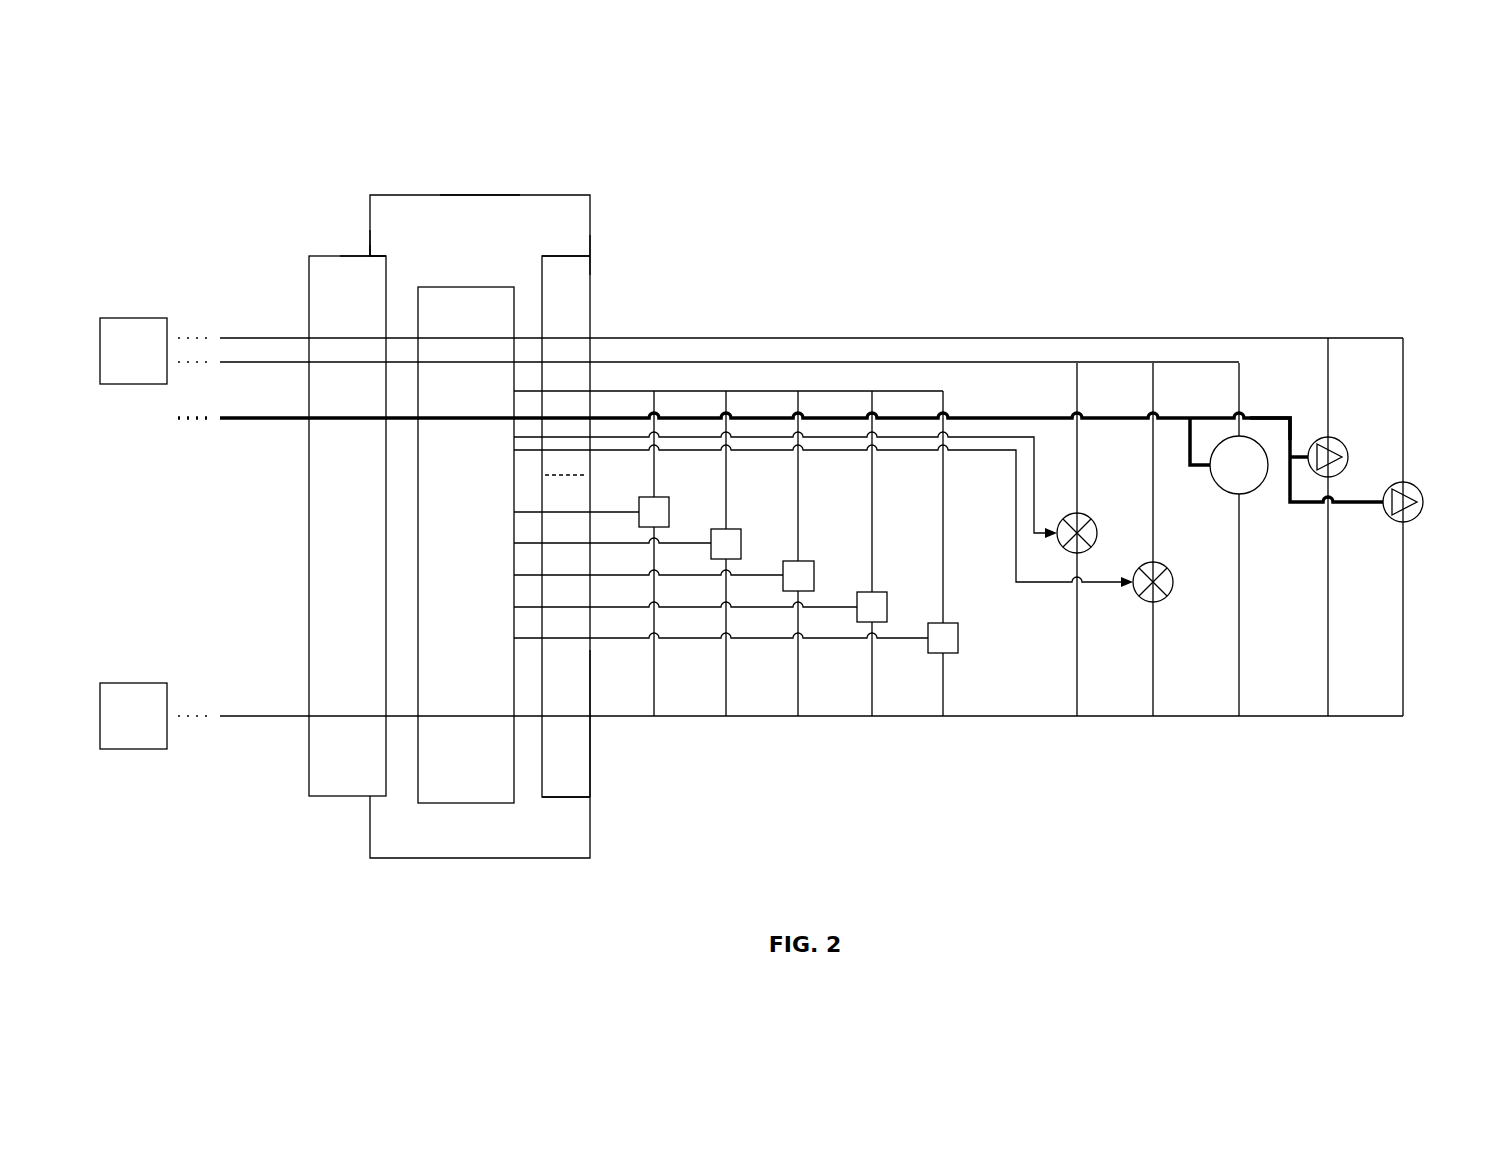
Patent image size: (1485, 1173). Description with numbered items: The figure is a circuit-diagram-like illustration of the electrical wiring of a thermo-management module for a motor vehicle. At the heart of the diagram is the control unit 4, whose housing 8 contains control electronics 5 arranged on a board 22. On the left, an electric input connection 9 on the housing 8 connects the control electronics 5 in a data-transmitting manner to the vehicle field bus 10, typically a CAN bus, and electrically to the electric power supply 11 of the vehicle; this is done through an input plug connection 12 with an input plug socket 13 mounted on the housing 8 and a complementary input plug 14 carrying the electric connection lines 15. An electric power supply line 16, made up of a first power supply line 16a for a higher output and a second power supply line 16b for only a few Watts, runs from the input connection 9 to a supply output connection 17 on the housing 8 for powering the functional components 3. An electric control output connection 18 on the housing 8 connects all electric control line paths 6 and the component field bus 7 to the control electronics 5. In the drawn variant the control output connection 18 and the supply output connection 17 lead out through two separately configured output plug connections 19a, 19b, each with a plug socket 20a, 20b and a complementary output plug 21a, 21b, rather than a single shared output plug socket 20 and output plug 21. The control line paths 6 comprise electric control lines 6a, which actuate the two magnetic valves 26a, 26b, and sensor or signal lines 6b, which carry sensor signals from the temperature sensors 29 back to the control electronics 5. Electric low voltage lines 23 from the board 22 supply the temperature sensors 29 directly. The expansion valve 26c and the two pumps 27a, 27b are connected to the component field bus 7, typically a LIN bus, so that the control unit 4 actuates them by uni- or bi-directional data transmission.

The functional components 3 is at (1057, 520).
The control unit 4 is at (478, 185).
The control electronics 5 is at (501, 545).
The electric control line paths 6 is at (785, 550).
The electric control lines 6a is at (902, 440).
The sensor or signal lines 6b is at (530, 513).
The component field bus 7 is at (1265, 415).
The housing 8 is at (442, 194).
The electric input connection 9 is at (378, 240).
The vehicle field bus 10 is at (264, 422).
The electric power supply 11 is at (121, 364).
The input plug connection 12 is at (357, 246).
The input plug socket 13 is at (357, 268).
The input plug 14 is at (334, 550).
The electric connection lines 15 is at (281, 360).
The electric power supply line 16 is at (790, 518).
The first power supply line 16a is at (402, 337).
The second power supply line 16b is at (397, 363).
The supply output connection 17 is at (658, 240).
The electric control output connection 18 is at (606, 248).
The output plug connection 19a is at (564, 235).
The output plug connection 19b is at (563, 822).
The output plug socket 20 is at (628, 526).
The plug socket 20a is at (545, 278).
The plug socket 20b is at (545, 778).
The output plug 21 is at (628, 549).
The output plug 21a is at (575, 318).
The output plug 21b is at (575, 752).
The board 22 is at (442, 483).
The electric low voltage lines 23 is at (770, 389).
The valve 26a is at (1090, 514).
The valve 26b is at (1165, 562).
The expansion valve 26c is at (1252, 495).
The pump 27a is at (1341, 440).
The pump 27b is at (1416, 485).
The temperature sensors 29 is at (670, 507).